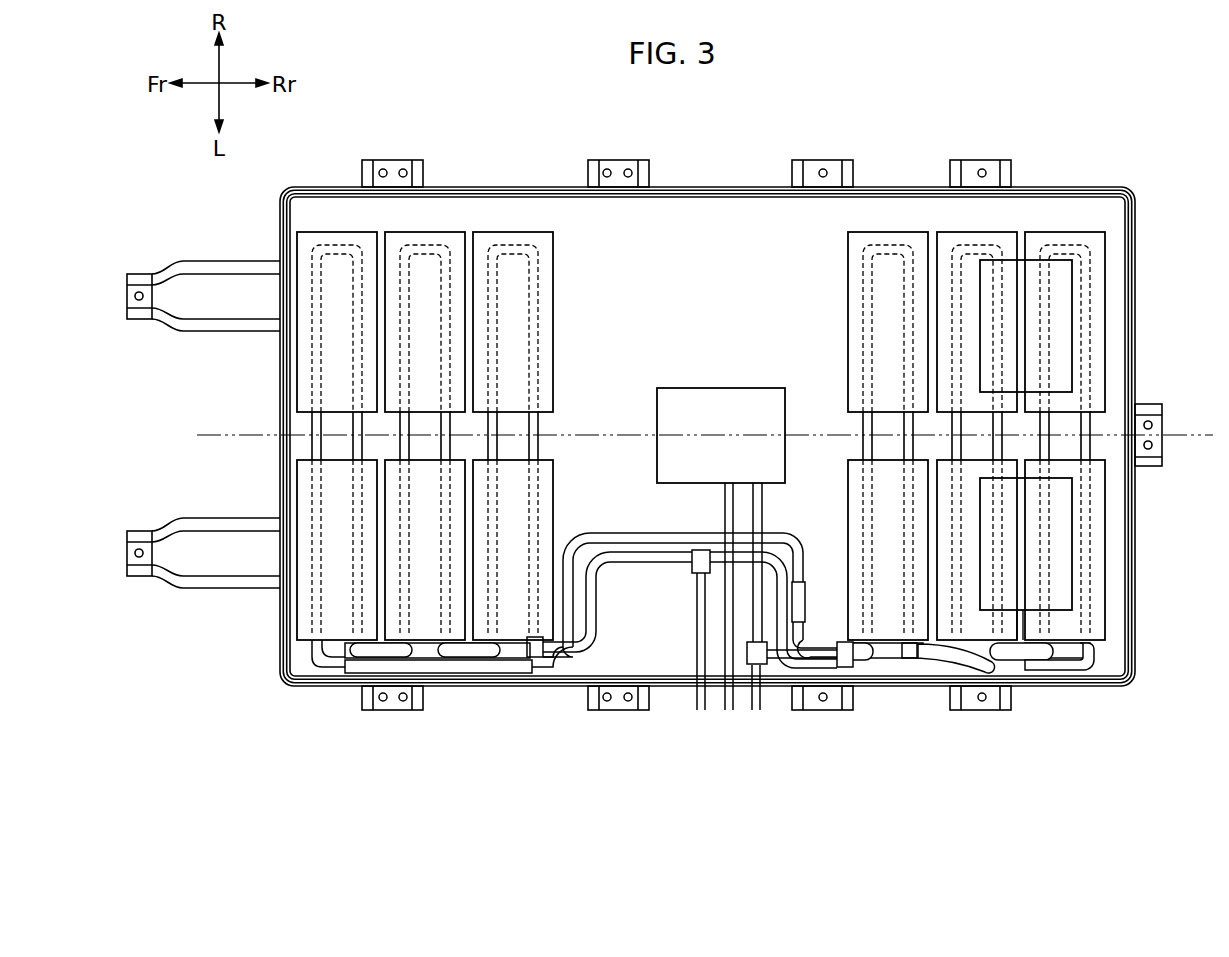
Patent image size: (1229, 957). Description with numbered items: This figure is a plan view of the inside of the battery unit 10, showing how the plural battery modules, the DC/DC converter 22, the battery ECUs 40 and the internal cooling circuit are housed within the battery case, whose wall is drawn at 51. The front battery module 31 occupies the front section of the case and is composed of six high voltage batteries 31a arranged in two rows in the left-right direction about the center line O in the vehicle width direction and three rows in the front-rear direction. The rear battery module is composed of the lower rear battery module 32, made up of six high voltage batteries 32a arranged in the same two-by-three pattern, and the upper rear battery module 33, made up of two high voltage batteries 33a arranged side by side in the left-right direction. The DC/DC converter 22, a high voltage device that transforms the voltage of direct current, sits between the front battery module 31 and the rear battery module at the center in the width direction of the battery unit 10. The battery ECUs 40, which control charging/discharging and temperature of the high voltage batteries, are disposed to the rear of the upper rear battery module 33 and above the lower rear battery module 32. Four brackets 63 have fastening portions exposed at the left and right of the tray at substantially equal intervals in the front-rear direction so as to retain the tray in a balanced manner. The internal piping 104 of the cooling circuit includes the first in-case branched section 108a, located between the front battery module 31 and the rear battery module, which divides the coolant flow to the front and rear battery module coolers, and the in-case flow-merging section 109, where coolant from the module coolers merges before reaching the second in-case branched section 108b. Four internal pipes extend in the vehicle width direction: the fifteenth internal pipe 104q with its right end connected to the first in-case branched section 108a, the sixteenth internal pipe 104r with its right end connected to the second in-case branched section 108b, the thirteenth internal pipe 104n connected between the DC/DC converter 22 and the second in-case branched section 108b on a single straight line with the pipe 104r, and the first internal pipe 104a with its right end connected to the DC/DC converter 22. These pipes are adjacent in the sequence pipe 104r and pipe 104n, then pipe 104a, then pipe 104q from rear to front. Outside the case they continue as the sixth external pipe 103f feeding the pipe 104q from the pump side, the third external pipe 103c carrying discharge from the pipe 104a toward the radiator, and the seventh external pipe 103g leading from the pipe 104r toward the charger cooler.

The battery unit 10 is at (644, 431).
The case 51 is at (1108, 186).
The DC/DC converter 22 is at (722, 388).
The front battery module 31 is at (461, 381).
The high voltage batteries 31a is at (455, 240).
The lower rear battery module 32 is at (1067, 381).
The high voltage batteries 32a is at (975, 240).
The upper rear battery module 33 is at (852, 381).
The high voltage batteries 33a is at (890, 240).
The battery ECUs 40 is at (1028, 300).
The brackets 63 is at (393, 711).
The internal piping 104 is at (593, 636).
The first internal pipe 104a is at (727, 628).
The thirteenth internal pipe 104n is at (763, 506).
The fifteenth internal pipe 104q is at (700, 608).
The sixteenth internal pipe 104r is at (747, 661).
The first in-case branched section 108a is at (692, 562).
The second in-case branched section 108b is at (762, 665).
The in-case flow-merging section 109 is at (838, 640).
The third external pipe 103c is at (729, 712).
The sixth external pipe 103f is at (701, 712).
The seventh external pipe 103g is at (756, 712).
The center line O is at (1197, 432).